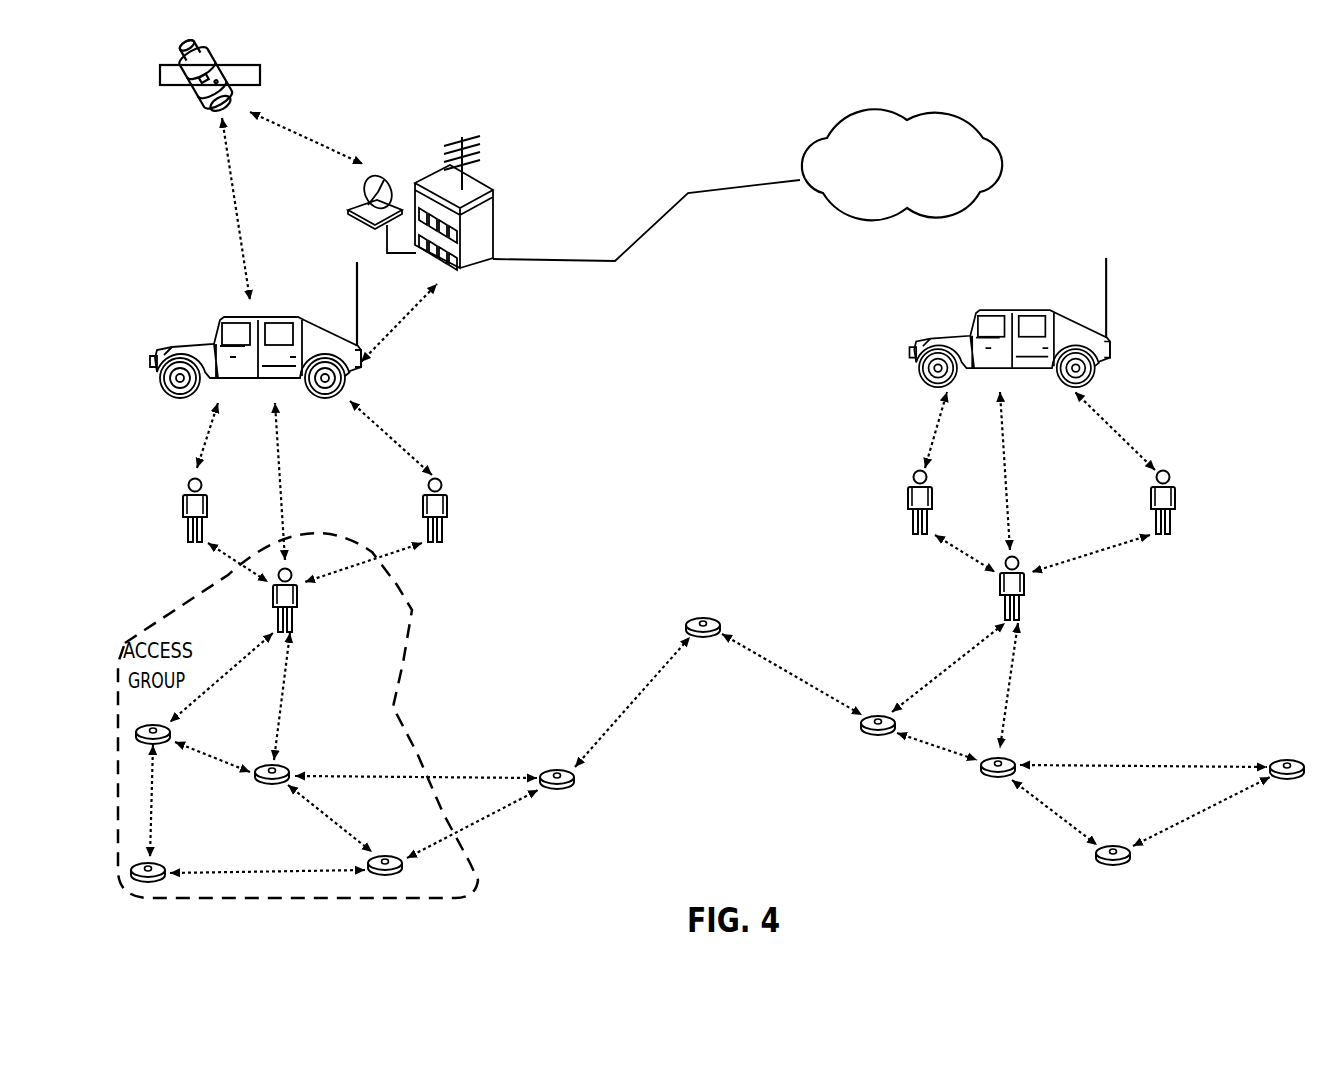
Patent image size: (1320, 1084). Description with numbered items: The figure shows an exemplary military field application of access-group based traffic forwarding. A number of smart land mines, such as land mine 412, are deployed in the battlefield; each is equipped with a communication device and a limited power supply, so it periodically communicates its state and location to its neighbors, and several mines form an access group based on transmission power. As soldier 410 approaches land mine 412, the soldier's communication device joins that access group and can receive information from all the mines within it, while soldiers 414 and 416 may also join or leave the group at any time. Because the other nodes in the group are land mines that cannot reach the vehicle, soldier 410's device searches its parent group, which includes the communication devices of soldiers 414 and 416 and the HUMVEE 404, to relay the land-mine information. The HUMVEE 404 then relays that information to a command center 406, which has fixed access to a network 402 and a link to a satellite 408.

The network 402 is at (971, 174).
The HUMVEE 404 is at (353, 383).
The command center 406 is at (497, 215).
The satellite 408 is at (261, 84).
The soldier 410 is at (297, 617).
The land mine 412 is at (288, 768).
The soldier 414 is at (443, 536).
The soldier 416 is at (185, 523).